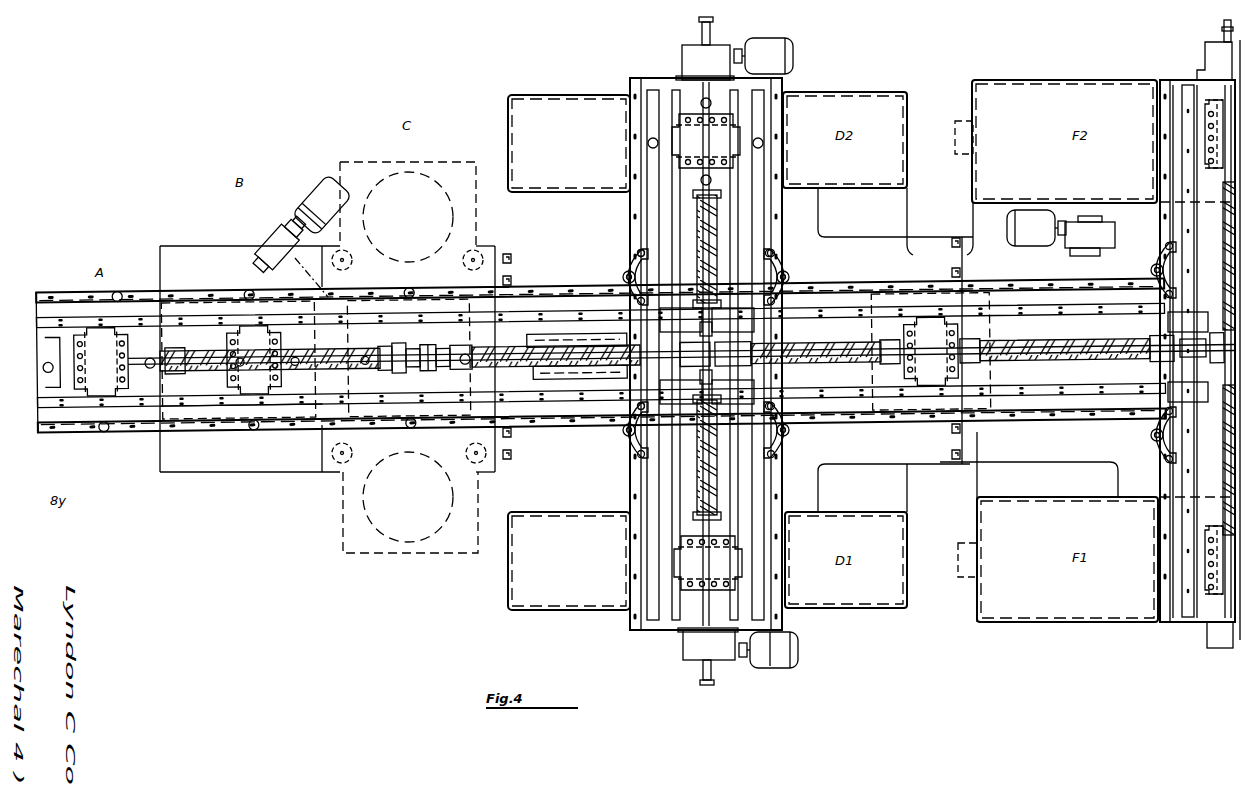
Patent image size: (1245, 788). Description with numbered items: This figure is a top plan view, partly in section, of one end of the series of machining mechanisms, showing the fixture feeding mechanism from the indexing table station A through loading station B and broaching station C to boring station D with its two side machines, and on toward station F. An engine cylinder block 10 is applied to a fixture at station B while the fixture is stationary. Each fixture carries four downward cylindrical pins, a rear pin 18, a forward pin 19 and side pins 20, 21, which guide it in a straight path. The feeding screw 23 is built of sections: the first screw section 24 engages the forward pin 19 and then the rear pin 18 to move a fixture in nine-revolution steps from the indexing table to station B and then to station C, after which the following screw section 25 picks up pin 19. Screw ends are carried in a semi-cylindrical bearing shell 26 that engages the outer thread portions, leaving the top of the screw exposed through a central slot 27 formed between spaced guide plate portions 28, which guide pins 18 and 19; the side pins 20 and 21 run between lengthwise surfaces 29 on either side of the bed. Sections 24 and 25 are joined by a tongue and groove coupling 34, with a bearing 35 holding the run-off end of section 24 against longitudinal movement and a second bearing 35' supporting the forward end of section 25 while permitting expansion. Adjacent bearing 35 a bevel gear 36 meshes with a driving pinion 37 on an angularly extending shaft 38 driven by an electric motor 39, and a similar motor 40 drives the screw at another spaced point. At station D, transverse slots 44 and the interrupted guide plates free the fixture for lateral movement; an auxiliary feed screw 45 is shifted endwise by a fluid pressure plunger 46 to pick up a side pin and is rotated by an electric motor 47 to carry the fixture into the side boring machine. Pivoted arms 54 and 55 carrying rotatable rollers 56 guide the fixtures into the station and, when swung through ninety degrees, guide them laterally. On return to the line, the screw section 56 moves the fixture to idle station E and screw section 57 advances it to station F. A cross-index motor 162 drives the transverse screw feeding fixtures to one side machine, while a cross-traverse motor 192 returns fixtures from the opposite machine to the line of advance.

The engine cylinder block 10 is at (76, 366).
The rear pin 18 is at (44, 362).
The forward pin 19 is at (148, 352).
The side pin 20 is at (126, 284).
The side pin 21 is at (101, 425).
The feeding screw 23 is at (238, 379).
The first screw section 24 is at (172, 366).
The screw section 25 is at (470, 348).
The semi-cylindrical bearing shell 26 is at (292, 404).
The central slot 27 is at (512, 346).
The guide plate portions 28 is at (578, 343).
The guide surfaces 29 is at (222, 420).
The tongue and groove coupling 34 is at (428, 368).
The bearing 35 is at (406, 368).
The second bearing 35' is at (451, 366).
The bevel gear 36 is at (384, 367).
The driving pinion 37 is at (396, 340).
The shaft 38 is at (306, 248).
The electric motor 39 is at (318, 194).
The electric motor 40 is at (1032, 214).
The transverse slots 44 is at (712, 329).
The auxiliary feed screw 45 is at (714, 452).
The fluid pressure operated plunger 46 is at (714, 680).
The electric motor 47 is at (775, 667).
The pivoted arm 54 is at (630, 272).
The pivoted arm 55 is at (785, 268).
The rotatable rollers 56 is at (822, 358).
The screw section 57 is at (1062, 357).
The cross-index motor 162 is at (794, 50).
The cross-traverse motor 192 is at (797, 641).